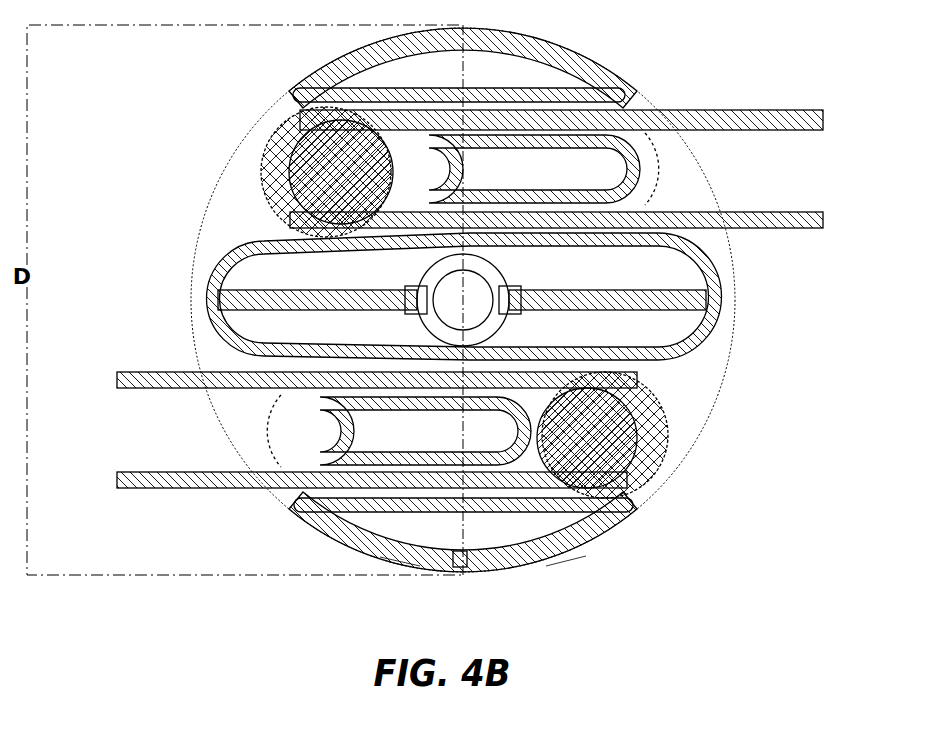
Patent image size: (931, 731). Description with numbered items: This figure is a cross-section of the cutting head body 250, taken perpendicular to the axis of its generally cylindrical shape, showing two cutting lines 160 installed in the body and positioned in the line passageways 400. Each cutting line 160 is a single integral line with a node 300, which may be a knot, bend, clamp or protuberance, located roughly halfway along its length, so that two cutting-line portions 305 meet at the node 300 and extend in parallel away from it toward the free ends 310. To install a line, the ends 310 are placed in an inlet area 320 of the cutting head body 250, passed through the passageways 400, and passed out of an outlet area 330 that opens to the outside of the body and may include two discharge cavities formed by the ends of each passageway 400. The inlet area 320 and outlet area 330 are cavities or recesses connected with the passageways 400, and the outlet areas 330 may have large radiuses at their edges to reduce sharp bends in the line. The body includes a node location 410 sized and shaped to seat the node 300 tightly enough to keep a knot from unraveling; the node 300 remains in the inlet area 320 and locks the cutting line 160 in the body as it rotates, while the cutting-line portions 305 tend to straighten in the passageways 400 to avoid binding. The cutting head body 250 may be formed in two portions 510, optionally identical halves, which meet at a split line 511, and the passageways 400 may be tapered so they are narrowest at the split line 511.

The cutting line 160 is at (453, 299).
The cutting head body 250 is at (378, 563).
The node 300 is at (290, 148).
The cutting-line portions 305 is at (453, 287).
The ends 310 is at (812, 112).
The inlet area 320 is at (234, 199).
The outlet area 330 is at (694, 178).
The line passageways 400 is at (638, 100).
The node location 410 is at (289, 172).
The portions 510 is at (407, 575).
The split line 511 is at (466, 550).